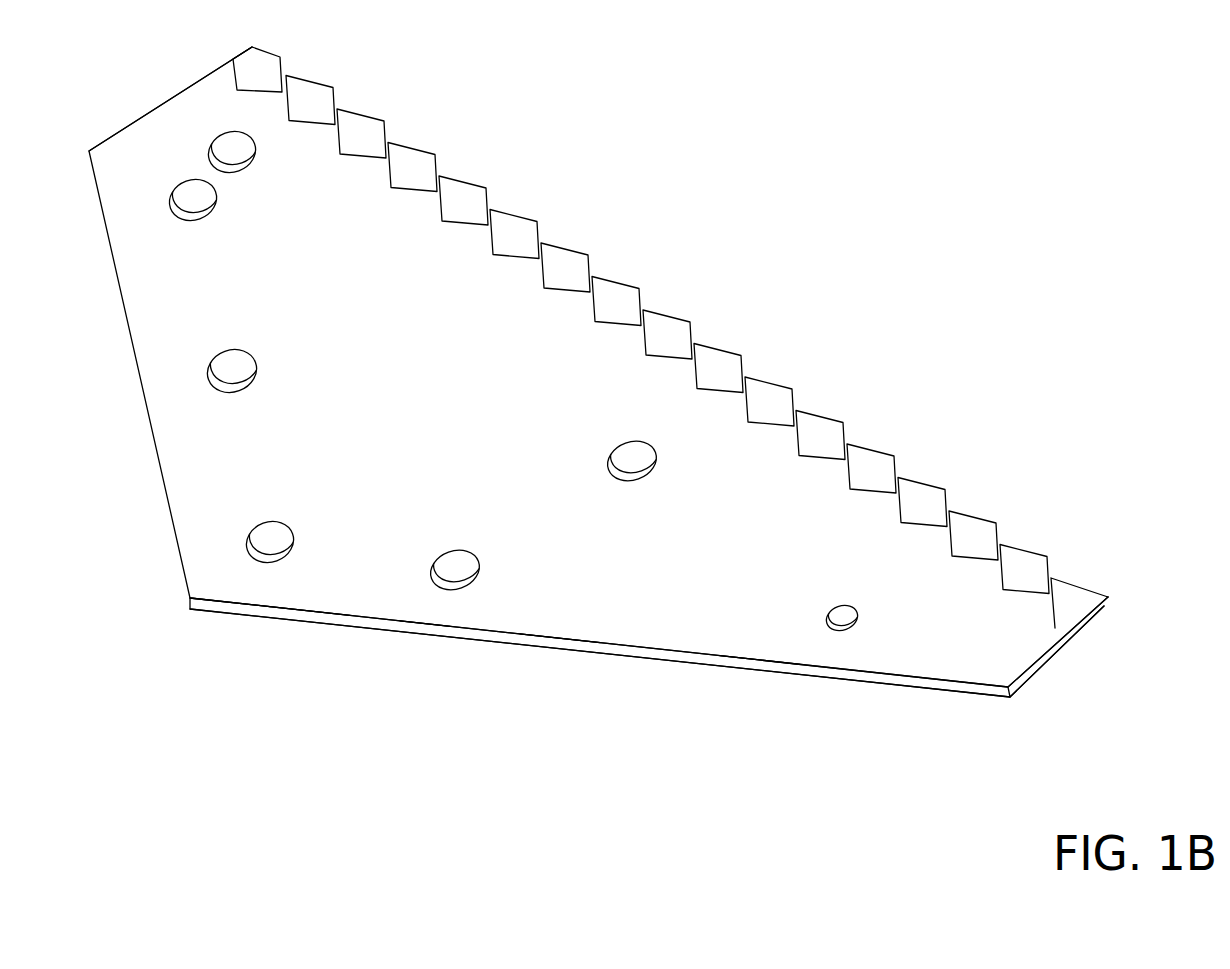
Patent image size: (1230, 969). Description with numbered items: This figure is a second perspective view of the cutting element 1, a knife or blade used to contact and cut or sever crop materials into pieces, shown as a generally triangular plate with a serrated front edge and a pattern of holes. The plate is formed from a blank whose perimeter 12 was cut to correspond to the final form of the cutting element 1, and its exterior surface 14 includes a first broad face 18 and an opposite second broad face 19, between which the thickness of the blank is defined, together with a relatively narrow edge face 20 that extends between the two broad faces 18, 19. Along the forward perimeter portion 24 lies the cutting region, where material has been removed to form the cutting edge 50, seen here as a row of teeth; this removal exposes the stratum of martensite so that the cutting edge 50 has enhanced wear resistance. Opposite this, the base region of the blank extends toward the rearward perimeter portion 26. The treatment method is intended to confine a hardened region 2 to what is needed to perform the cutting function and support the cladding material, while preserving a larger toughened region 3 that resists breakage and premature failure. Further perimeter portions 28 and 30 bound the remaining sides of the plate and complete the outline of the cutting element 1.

The cutting element 1 is at (882, 119).
The hardened region 2 is at (670, 337).
The toughened region 3 is at (427, 653).
The perimeter 12 is at (656, 673).
The exterior surface 14 is at (757, 637).
The first broad face 18 is at (327, 585).
The second broad face 19 is at (262, 618).
The edge face 20 is at (878, 680).
The forward perimeter portion 24 is at (757, 397).
The rearward perimeter portion 26 is at (560, 648).
The end edge 28 is at (1043, 655).
The top edge 30 is at (148, 114).
The cutting edge 50 is at (707, 343).